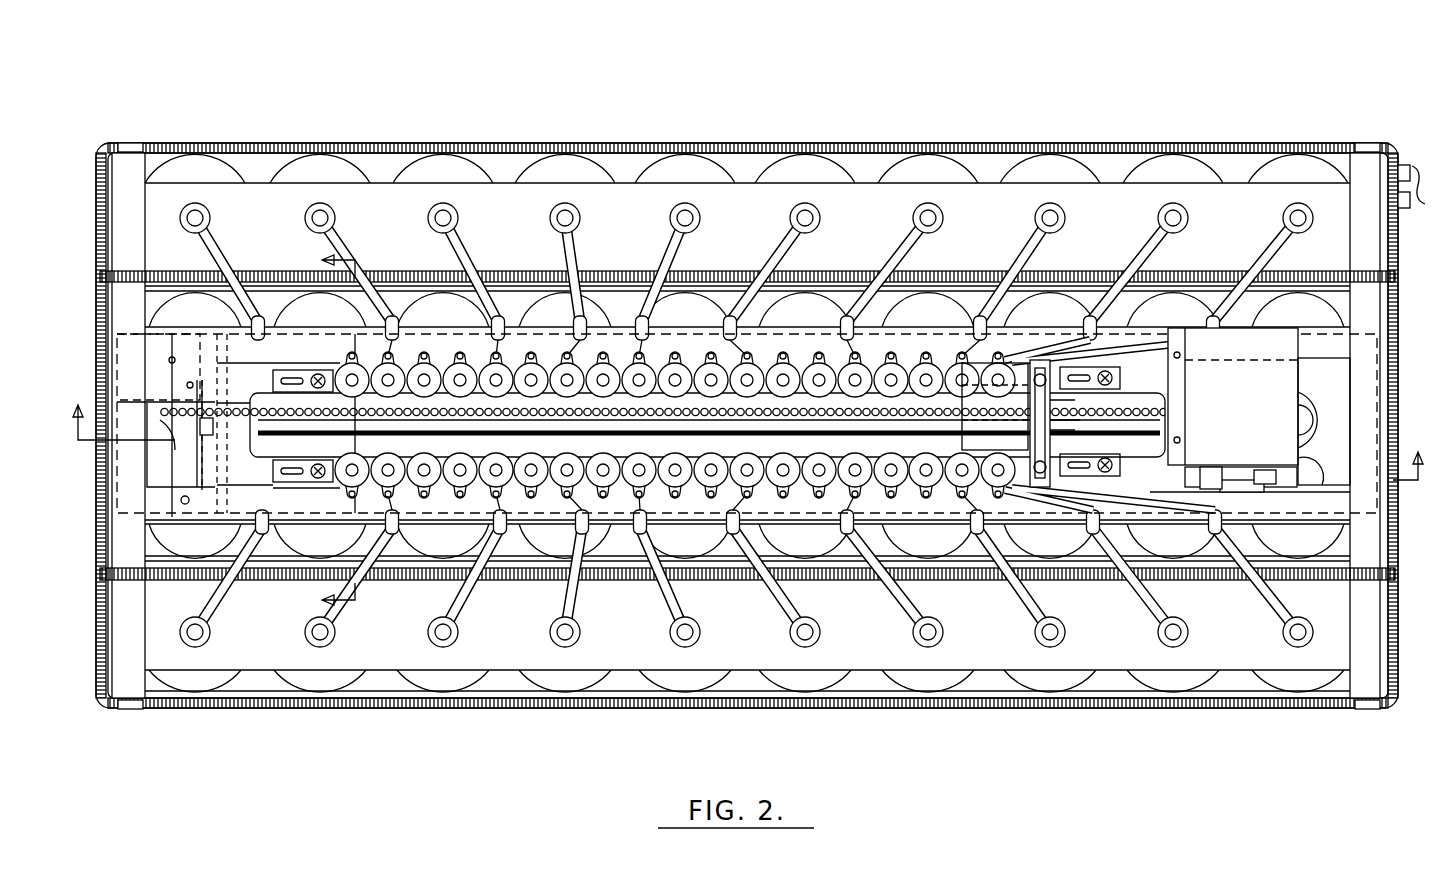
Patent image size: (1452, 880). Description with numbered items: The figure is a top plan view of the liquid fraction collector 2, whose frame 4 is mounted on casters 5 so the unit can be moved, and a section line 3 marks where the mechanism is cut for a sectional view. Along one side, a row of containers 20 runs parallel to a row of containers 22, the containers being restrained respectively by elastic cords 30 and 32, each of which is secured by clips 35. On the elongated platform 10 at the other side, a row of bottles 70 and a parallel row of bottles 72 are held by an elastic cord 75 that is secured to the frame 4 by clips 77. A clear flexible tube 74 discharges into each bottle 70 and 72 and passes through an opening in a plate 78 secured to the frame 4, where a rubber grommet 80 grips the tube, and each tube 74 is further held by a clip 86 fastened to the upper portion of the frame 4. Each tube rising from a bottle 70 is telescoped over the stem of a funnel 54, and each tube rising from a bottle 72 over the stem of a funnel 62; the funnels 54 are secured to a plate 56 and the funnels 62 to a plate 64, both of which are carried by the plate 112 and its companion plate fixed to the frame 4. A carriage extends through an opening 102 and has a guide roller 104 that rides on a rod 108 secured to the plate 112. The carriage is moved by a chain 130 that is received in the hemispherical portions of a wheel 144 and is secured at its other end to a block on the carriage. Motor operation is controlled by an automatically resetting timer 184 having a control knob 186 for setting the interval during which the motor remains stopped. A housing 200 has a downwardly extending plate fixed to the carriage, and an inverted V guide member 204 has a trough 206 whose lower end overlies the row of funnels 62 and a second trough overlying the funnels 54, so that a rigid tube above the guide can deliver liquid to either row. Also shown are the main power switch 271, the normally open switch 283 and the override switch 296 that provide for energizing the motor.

The liquid fraction collector 2 is at (1303, 77).
The section line 3 is at (747, 426).
The frame 4 is at (1393, 338).
The casters 5 is at (323, 429).
The elongated platform 10 is at (870, 682).
The containers 20 is at (782, 305).
The containers 22 is at (703, 545).
The elastic cord 30 is at (834, 270).
The elastic cord 32 is at (824, 584).
The clips 35 is at (102, 272).
The funnel 54 is at (770, 358).
The plate 56 is at (303, 362).
The funnel 62 is at (773, 482).
The plate 64 is at (292, 477).
The bottles 70 is at (420, 168).
The bottles 72 is at (408, 688).
The clear flexible tube 74 is at (935, 242).
The elastic cord 75 is at (808, 160).
The clips 77 is at (1425, 186).
The plate 78 is at (640, 222).
The rubber grommet 80 is at (668, 632).
The clip 86 is at (480, 326).
The opening 102 is at (287, 363).
The guide roller 104 is at (1135, 443).
The rod 108 is at (331, 428).
The plate 112 is at (282, 469).
The chain 130 is at (268, 402).
The wheel 144 is at (185, 395).
The automatically resetting timer 184 is at (1254, 396).
The control knob 186 is at (1247, 492).
The housing 200 is at (995, 406).
The inverted V guide member 204 is at (1115, 374).
The trough 206 is at (1050, 477).
The main power switch 271 is at (1210, 467).
The switch 283 is at (1262, 470).
The override switch 296 is at (1262, 463).